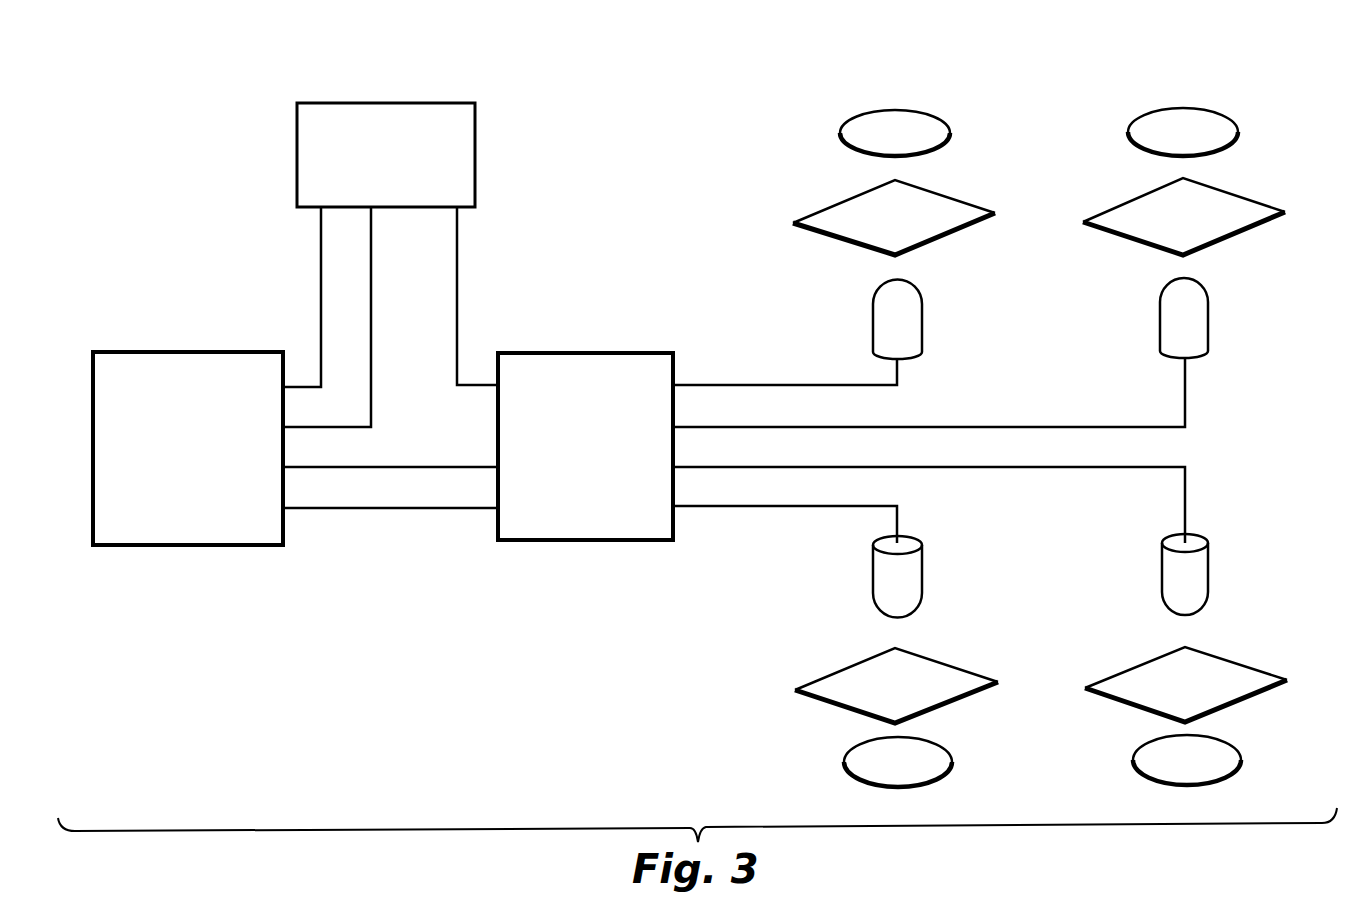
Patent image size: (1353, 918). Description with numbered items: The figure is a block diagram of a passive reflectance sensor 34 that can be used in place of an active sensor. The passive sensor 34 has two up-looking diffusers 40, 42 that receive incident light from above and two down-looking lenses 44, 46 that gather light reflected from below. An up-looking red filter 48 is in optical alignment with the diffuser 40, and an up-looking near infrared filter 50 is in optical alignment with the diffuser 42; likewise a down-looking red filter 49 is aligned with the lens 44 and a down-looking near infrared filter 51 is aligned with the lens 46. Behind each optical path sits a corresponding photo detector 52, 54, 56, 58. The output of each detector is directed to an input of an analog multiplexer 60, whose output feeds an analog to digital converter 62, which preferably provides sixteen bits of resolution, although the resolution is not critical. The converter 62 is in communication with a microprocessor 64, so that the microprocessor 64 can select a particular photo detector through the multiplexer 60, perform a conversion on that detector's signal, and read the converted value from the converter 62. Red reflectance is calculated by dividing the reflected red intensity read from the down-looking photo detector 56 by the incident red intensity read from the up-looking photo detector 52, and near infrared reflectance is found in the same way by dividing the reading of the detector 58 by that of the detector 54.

The passive sensor 34 is at (1242, 100).
The up-looking diffuser 40 is at (947, 125).
The up-looking diffuser 42 is at (1237, 133).
The down-looking lens 44 is at (948, 757).
The down-looking lens 46 is at (1233, 753).
The up-looking red filter 48 is at (947, 237).
The down-looking red filter 49 is at (953, 673).
The up-looking near infrared filter 50 is at (1243, 228).
The down-looking near infrared filter 51 is at (1260, 673).
The up-looking photo detector 52 is at (920, 318).
The photo detector 54 is at (1208, 315).
The down-looking photo detector 56 is at (913, 583).
The photo detector 58 is at (1205, 577).
The analog multiplexer 60 is at (593, 353).
The analog to digital converter 62 is at (297, 122).
The microprocessor 64 is at (152, 352).